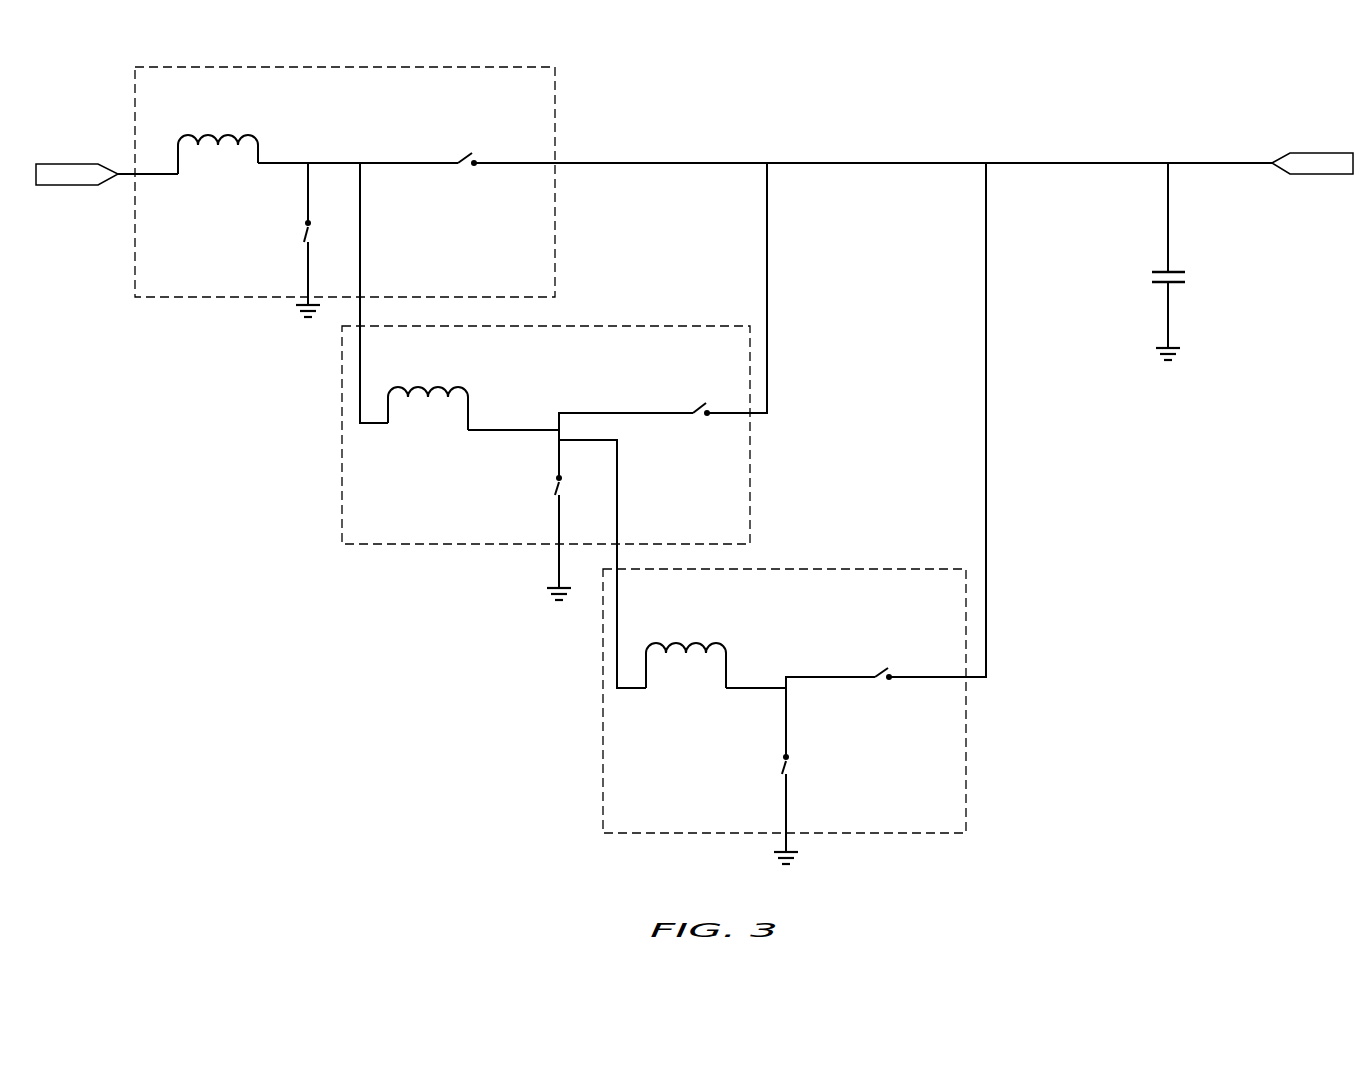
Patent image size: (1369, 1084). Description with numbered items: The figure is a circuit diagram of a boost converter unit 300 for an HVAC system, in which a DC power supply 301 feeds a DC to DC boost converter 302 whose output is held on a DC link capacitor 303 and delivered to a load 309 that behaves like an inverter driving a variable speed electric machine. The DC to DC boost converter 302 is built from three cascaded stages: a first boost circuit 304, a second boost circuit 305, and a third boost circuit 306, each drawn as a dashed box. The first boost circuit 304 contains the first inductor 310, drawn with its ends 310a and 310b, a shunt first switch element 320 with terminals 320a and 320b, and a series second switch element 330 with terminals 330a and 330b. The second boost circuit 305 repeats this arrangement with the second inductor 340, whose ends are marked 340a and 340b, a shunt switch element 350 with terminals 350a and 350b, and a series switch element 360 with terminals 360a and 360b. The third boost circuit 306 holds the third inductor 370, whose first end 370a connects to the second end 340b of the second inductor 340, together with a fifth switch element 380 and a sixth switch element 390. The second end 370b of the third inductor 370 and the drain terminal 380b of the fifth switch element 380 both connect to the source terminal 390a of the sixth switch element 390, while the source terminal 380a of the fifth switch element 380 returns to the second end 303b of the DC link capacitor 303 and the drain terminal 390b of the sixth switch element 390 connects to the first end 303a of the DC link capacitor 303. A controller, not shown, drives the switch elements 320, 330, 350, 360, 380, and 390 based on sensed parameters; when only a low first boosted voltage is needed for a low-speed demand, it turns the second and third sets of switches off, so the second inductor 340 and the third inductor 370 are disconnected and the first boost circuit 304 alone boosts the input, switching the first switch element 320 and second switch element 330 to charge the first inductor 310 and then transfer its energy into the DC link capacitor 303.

The boost converter unit 300 is at (1309, 96).
The DC power supply 301 is at (73, 198).
The DC to DC boost converter 302 is at (270, 630).
The DC link capacitor 303 is at (1127, 261).
The first end of the DC link capacitor 303a is at (1160, 260).
The second end of the DC link capacitor 303b is at (1158, 294).
The first boost circuit 304 is at (557, 111).
The second boost circuit 305 is at (340, 461).
The third boost circuit 306 is at (598, 729).
The load 309 is at (1271, 148).
The first inductor 310 is at (227, 126).
The first terminal of first inductor 310a is at (163, 156).
The second terminal of first inductor 310b is at (270, 157).
The first switch element 320 is at (276, 240).
The first terminal of first shunt switch 320a is at (302, 254).
The second terminal of first shunt switch 320b is at (303, 212).
The second switch element 330 is at (452, 127).
The first terminal of first series switch 330a is at (446, 155).
The second terminal of first series switch 330b is at (497, 154).
The second inductor 340 is at (436, 379).
The first terminal of second inductor 340a is at (373, 409).
The second end of the second inductor 340b is at (482, 407).
The switch element 350 is at (525, 520).
The first terminal of second shunt switch 350a is at (552, 500).
The second terminal of second shunt switch 350b is at (553, 462).
The switch element 360 is at (663, 296).
The first terminal of second series switch 360a is at (683, 404).
The second terminal of second series switch 360b is at (731, 404).
The third inductor 370 is at (695, 636).
The first end of the third inductor 370a is at (632, 664).
The second end of the third inductor 370b is at (741, 664).
The fifth switch element 380 is at (753, 776).
The source terminal of the fifth switch element 380a is at (780, 786).
The drain terminal of the fifth switch element 380b is at (780, 745).
The sixth switch element 390 is at (886, 425).
The source terminal of the sixth switch element 390a is at (863, 671).
The drain terminal of the sixth switch element 390b is at (913, 667).